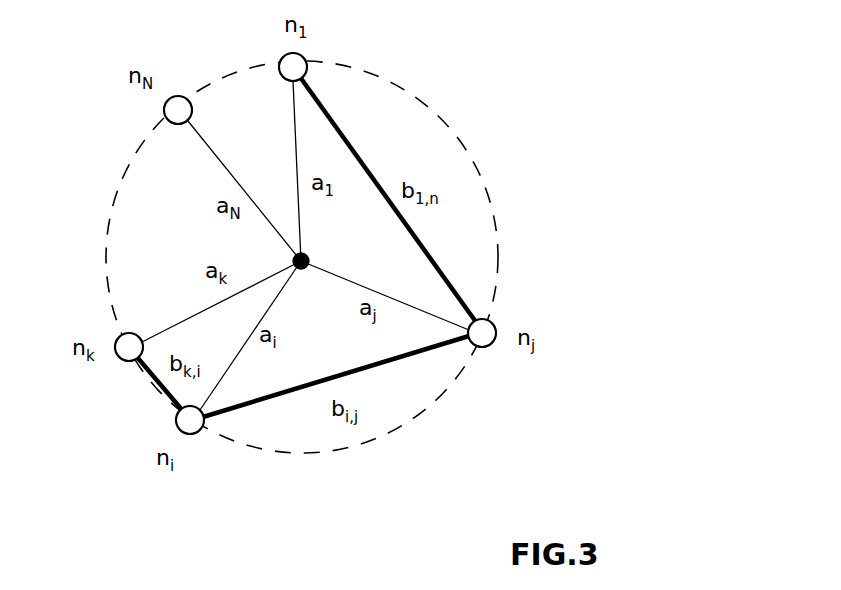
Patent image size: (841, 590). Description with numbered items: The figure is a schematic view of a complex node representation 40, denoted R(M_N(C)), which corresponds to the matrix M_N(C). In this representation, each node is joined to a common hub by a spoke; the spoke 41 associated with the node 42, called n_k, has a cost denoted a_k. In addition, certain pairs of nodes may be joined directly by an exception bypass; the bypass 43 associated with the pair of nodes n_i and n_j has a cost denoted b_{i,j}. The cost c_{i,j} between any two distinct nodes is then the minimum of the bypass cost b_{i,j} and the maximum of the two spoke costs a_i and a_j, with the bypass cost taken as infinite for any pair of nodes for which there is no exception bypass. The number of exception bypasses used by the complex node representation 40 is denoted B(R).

The complex node representation 40 is at (494, 48).
The spoke 41 is at (192, 317).
The node 42 is at (124, 364).
The bypass 43 is at (398, 360).